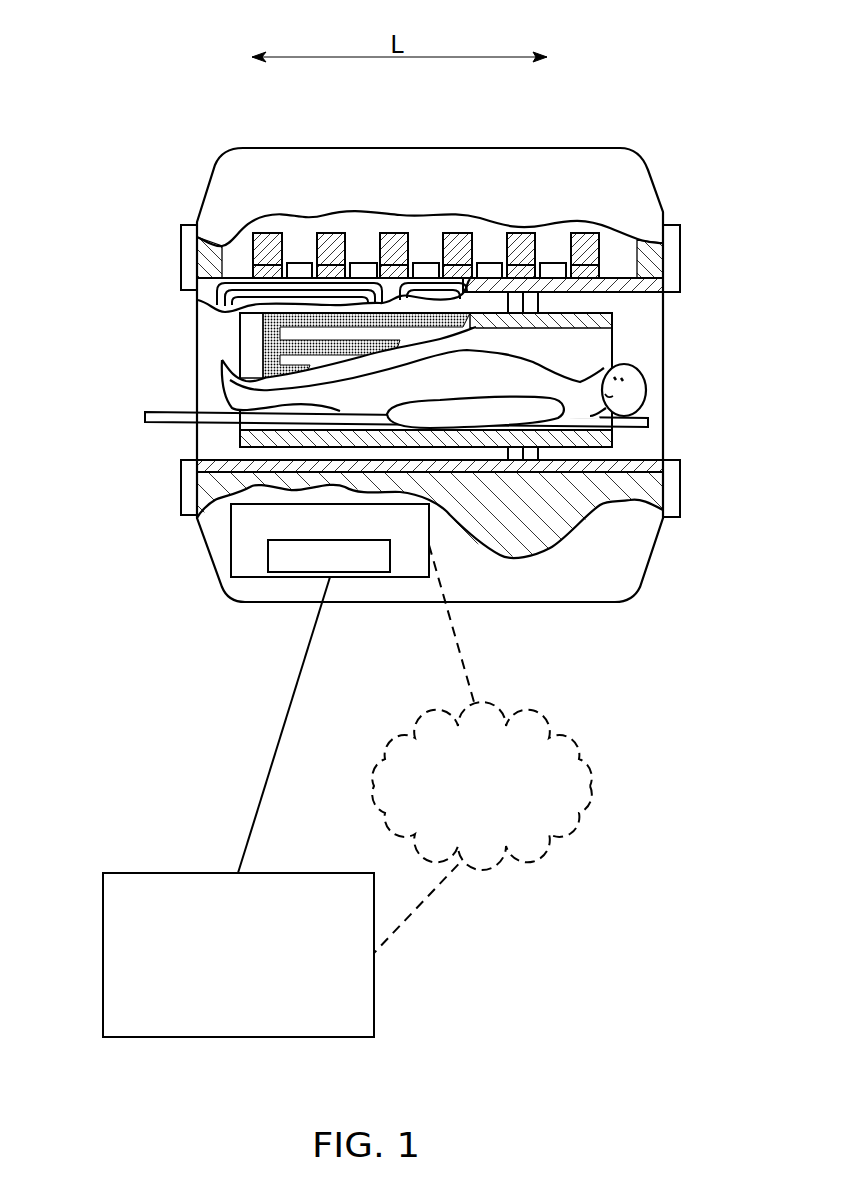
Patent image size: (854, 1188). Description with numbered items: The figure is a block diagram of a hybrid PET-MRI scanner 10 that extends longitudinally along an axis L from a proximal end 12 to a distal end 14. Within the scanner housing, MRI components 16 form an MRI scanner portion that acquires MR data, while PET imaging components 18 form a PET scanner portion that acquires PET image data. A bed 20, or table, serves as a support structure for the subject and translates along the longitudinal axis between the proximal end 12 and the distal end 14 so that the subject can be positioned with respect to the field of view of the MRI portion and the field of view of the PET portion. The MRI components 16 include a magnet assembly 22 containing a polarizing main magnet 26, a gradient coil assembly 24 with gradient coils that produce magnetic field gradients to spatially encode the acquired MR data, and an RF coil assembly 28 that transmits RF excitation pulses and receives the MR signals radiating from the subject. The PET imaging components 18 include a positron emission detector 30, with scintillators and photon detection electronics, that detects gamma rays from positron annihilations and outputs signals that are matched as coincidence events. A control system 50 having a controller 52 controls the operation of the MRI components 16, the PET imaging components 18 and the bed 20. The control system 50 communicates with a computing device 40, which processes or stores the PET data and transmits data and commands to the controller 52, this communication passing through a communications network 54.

The PET-MRI scanner 10 is at (197, 65).
The proximal end 12 is at (95, 388).
The distal end 14 is at (712, 450).
The MRI components 16 is at (230, 210).
The PET imaging components 18 is at (540, 302).
The bed 20 is at (167, 423).
The magnet assembly 22 is at (205, 190).
The gradient coil assembly 24 is at (204, 291).
The polarizing main magnet 26 is at (268, 234).
The RF coil assembly 28 is at (588, 347).
The positron emission detector 30 is at (507, 455).
The computing device 40 is at (103, 905).
The control system 50 is at (231, 540).
The controller 52 is at (280, 574).
The communications network 54 is at (600, 784).